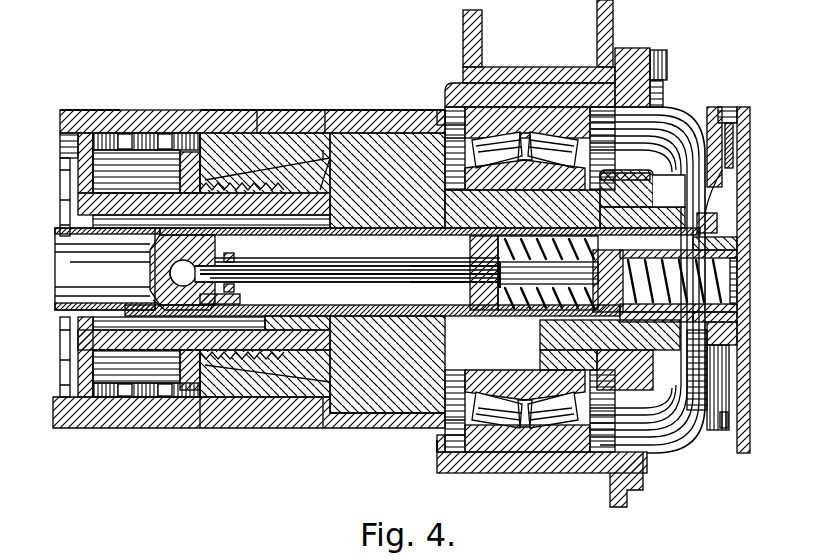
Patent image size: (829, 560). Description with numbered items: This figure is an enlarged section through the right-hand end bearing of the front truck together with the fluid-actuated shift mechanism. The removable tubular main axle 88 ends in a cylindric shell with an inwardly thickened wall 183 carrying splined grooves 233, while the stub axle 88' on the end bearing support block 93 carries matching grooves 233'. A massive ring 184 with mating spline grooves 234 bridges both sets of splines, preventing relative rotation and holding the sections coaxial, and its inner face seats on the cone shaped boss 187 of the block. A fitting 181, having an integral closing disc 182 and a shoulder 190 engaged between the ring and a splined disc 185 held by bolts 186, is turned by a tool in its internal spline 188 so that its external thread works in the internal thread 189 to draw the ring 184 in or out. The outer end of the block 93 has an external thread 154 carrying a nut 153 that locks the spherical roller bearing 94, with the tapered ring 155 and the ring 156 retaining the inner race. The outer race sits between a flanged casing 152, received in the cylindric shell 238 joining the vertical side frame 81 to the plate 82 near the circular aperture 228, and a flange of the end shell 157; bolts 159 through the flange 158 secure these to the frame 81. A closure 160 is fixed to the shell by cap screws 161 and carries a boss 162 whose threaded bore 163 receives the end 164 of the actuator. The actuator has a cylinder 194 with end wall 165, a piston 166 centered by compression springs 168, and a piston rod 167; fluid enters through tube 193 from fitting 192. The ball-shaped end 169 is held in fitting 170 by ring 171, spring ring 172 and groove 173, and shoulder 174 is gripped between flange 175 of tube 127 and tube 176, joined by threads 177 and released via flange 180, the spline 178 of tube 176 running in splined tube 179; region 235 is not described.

The vertical side frame 81 is at (598, 34).
The plate 82 is at (482, 40).
The tubular main axle 88 is at (90, 97).
The stub axle 88' is at (352, 101).
The end bearing support block 93 is at (395, 130).
The spherical roller bearing 94 is at (497, 140).
The tube 127 is at (57, 231).
The flanged casing 152 is at (437, 453).
The nut 153 is at (648, 379).
The external thread 154 is at (641, 212).
The ring of tapered section 155 is at (548, 197).
The ring 156 is at (447, 172).
The end shell 157 is at (705, 145).
The flange 158 is at (652, 92).
The bolts 159 is at (668, 62).
The closure 160 is at (748, 207).
The cap screws 161 is at (728, 421).
The boss 162 is at (737, 339).
The threaded bore 163 is at (732, 302).
The actuator end 164 is at (740, 262).
The end wall 165 is at (478, 302).
The piston 166 is at (633, 316).
The piston rod 167 is at (412, 267).
The compression springs 168 is at (720, 281).
The ball-shaped end 169 is at (168, 277).
The fitting 170 is at (150, 265).
The ring 171 is at (213, 289).
The spring ring 172 is at (216, 261).
The groove 173 is at (215, 301).
The shoulder 174 is at (152, 297).
The inwardly protruding flange 175 is at (204, 204).
The tube 176 is at (308, 250).
The threads 177 is at (215, 320).
The spline 178 is at (443, 316).
The splined tube 179 is at (610, 345).
The flange 180 is at (673, 350).
The fitting 181 is at (93, 198).
The closing disc 182 is at (70, 146).
The thickened wall 183 is at (167, 112).
The ring 184 is at (303, 130).
The splined disc 185 is at (180, 184).
The bolts 186 is at (178, 373).
The cone shaped boss 187 is at (308, 361).
The internal spline 188 is at (303, 196).
The internal thread 189 is at (318, 195).
The shoulder 190 is at (283, 189).
The fitting 192 is at (748, 107).
The tube 193 is at (553, 238).
The cylinder 194 is at (480, 240).
The circular aperture 228 is at (460, 83).
The splined grooves 233 is at (146, 140).
The internal spline grooves 233' is at (332, 116).
The mating spline grooves 234 is at (238, 112).
The body block 235 is at (385, 325).
The cylindric shell 238 is at (557, 73).